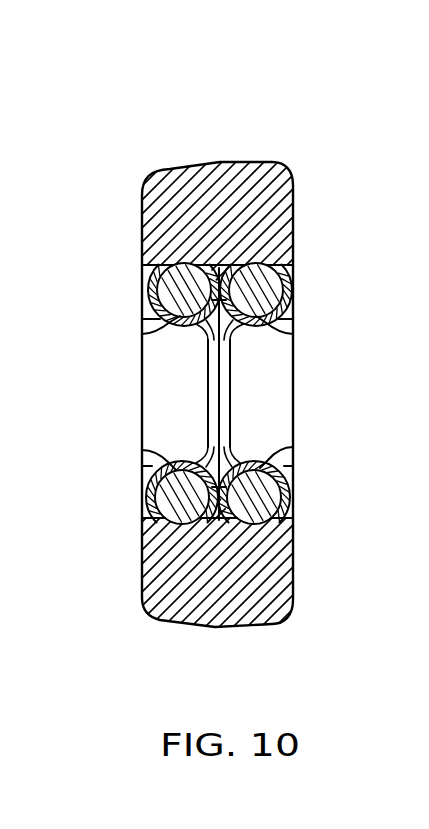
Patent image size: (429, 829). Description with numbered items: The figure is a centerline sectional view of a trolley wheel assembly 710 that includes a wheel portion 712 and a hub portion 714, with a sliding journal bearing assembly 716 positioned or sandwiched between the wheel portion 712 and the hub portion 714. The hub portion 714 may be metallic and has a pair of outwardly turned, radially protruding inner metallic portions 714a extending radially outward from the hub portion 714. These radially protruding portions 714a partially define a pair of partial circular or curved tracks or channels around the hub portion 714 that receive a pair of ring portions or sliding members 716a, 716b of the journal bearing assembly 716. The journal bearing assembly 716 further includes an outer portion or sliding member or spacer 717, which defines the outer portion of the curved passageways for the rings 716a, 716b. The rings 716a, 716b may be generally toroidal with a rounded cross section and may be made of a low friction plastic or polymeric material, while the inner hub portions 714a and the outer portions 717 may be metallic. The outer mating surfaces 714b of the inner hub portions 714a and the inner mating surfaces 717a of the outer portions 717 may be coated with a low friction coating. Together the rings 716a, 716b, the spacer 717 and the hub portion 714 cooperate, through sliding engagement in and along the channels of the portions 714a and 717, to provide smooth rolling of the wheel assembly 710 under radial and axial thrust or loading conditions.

The trolley wheel assembly 710 is at (285, 104).
The wheel portion 712 is at (290, 152).
The hub portion 714 is at (312, 389).
The radially protruding inner metallic portions 714a is at (293, 338).
The outer mating surfaces 714b is at (293, 447).
The journal bearing assembly 716 is at (120, 272).
The ring portion 716a is at (172, 291).
The ring portion 716b is at (282, 271).
The outer portion or spacer 717 is at (266, 258).
The inner mating surfaces 717a is at (168, 257).